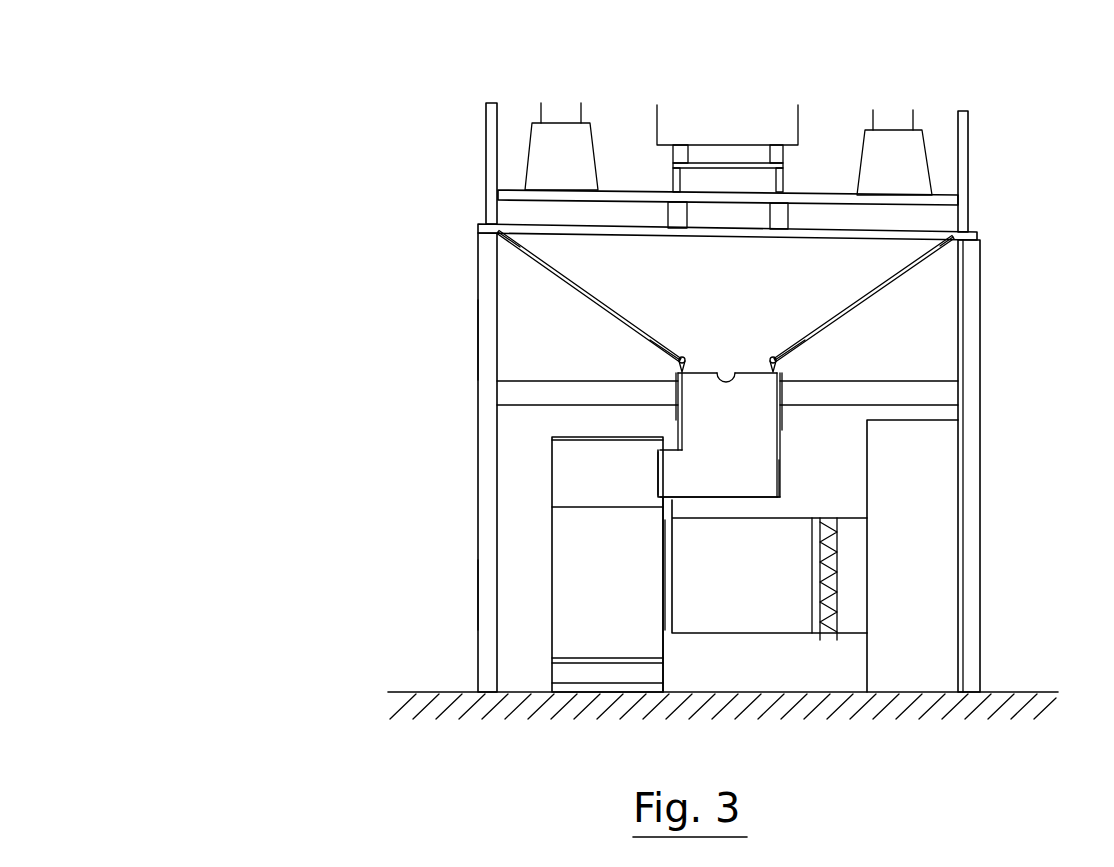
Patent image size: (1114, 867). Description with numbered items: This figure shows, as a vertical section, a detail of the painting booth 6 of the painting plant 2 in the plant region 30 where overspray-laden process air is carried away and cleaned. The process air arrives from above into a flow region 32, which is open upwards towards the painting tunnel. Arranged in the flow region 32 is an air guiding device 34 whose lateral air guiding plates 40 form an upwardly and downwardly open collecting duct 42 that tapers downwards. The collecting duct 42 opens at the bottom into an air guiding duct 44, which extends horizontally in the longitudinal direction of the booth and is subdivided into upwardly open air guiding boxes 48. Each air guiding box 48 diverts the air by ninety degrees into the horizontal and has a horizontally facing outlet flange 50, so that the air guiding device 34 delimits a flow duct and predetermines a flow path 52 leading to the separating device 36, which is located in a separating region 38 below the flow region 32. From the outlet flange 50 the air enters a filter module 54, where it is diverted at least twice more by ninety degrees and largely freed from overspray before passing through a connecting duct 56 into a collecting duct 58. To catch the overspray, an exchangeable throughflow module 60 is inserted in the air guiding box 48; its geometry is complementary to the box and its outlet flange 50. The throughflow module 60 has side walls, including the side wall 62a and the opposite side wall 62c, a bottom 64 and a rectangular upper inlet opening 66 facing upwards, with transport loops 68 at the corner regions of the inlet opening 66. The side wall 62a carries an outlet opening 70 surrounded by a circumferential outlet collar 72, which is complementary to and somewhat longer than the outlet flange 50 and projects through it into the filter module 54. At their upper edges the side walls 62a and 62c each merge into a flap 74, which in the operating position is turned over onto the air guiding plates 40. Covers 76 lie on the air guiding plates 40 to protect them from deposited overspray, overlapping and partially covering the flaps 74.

The bag filling apparatus 2 is at (419, 100).
The painting booth 6 is at (984, 190).
The plant region 30 is at (318, 475).
The flow region 32 is at (483, 337).
The air guiding device 34 is at (814, 375).
The separating device 36 is at (688, 656).
The separating region 38 is at (496, 593).
The air guiding plates 40 is at (520, 245).
The collecting duct 42 is at (749, 275).
The air guiding duct 44 is at (777, 443).
The air guiding boxes 48 is at (797, 477).
The outlet flange 50 is at (678, 447).
The flow path 52 is at (693, 303).
The filter module 54 is at (548, 637).
The connecting duct 56 is at (785, 620).
The collecting duct 58 is at (928, 602).
The throughflow module 60 is at (801, 400).
The side wall 62a is at (677, 400).
The side wall 62c is at (783, 430).
The bottom 64 is at (723, 500).
The inlet opening 66 is at (725, 373).
The transport loops 68 is at (690, 363).
The outlet opening 70 is at (678, 450).
The outlet collar 72 is at (657, 480).
The flap 74 is at (667, 367).
The covers 76 is at (537, 263).